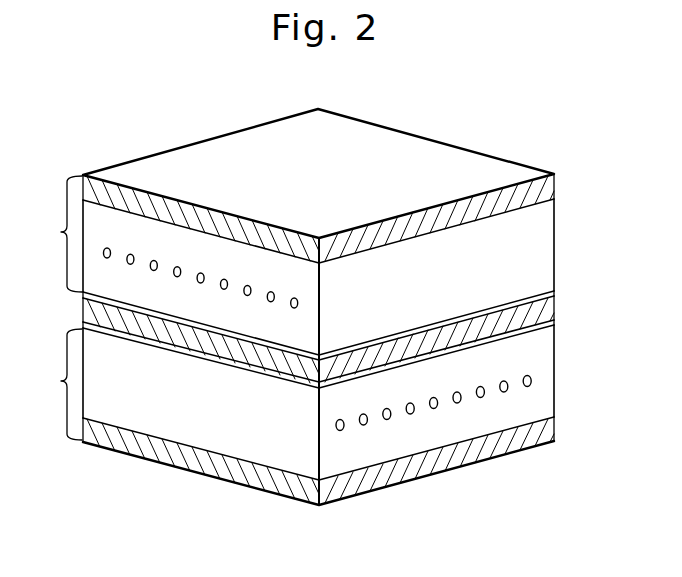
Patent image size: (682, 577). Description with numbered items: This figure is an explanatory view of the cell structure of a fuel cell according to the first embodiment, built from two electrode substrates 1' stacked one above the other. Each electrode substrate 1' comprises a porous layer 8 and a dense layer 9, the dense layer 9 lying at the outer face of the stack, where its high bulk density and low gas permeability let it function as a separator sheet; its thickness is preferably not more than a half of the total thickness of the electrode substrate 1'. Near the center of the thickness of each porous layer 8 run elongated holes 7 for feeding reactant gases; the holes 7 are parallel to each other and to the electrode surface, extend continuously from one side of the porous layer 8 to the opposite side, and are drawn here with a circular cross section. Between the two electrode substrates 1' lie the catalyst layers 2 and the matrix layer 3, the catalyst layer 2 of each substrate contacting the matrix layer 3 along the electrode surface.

The electrode substrate 1' is at (57, 308).
The catalyst layer 2 is at (537, 298).
The matrix layer 3 is at (547, 312).
The holes 7 is at (104, 258).
The porous layer 8 is at (540, 238).
The dense layer 9 is at (543, 190).